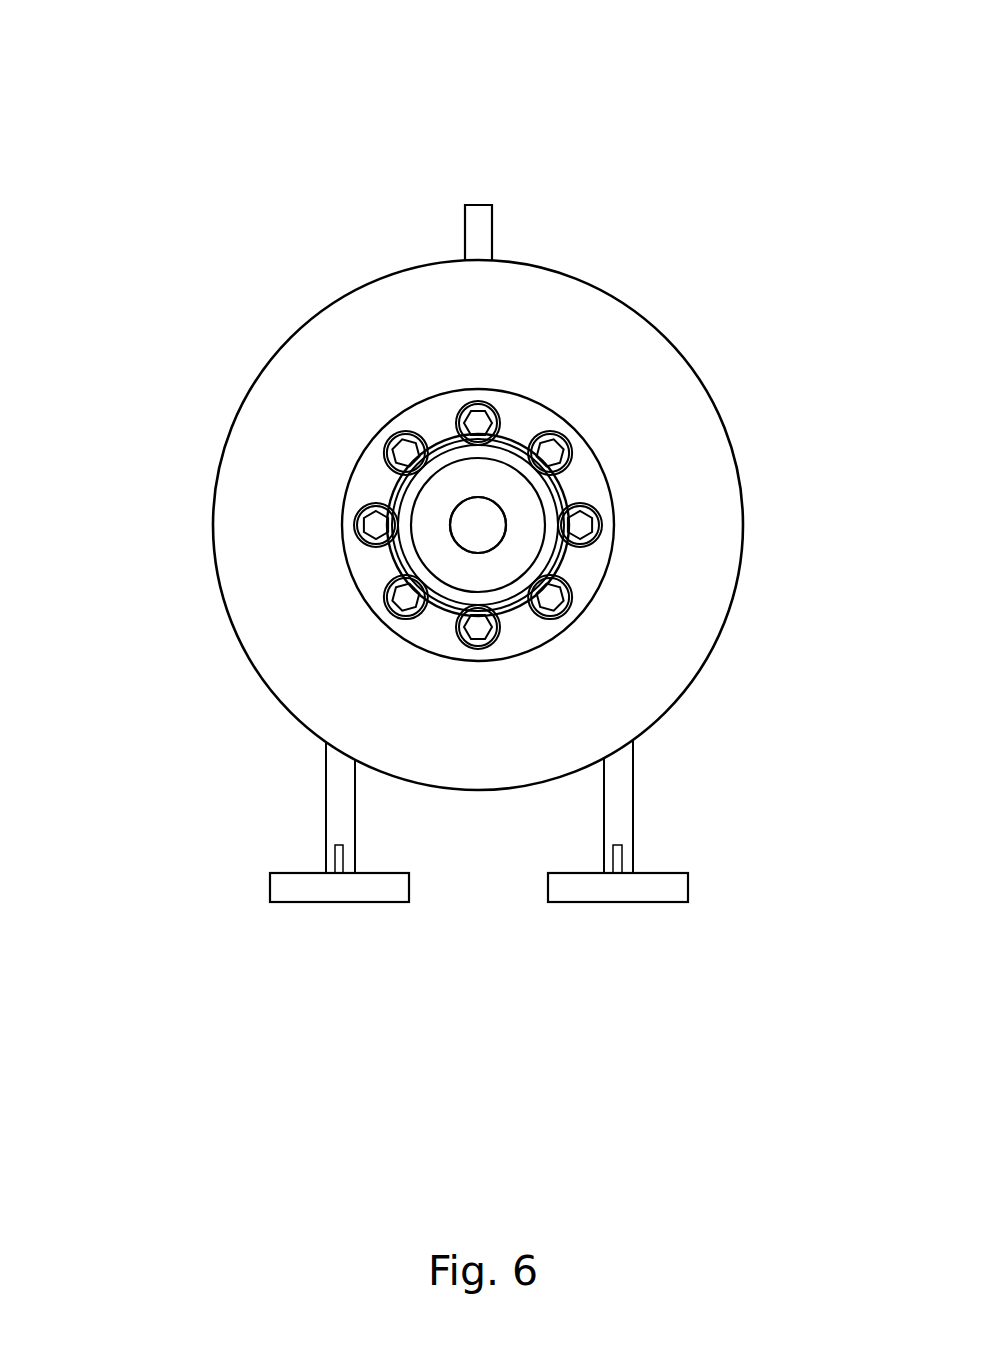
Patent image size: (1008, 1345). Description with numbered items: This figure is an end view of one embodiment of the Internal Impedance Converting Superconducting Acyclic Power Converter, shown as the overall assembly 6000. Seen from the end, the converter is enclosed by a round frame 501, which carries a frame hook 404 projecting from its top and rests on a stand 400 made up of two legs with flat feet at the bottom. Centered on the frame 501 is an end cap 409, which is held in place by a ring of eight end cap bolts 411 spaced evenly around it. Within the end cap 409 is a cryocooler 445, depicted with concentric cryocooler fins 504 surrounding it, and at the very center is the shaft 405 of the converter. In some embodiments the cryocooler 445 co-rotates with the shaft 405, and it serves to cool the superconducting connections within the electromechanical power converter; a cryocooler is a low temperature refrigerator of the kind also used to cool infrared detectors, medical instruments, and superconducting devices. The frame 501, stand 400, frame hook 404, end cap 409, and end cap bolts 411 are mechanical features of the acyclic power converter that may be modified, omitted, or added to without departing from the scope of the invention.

The motor assembly 6000 is at (462, 531).
The frame hooks 404 is at (487, 203).
The frame 501 is at (652, 382).
The end cap bolts 411 is at (395, 442).
The end cap 409 is at (358, 497).
The cryocooler 445 is at (522, 510).
The shaft 405 is at (478, 527).
The cryocooler fins 504 is at (520, 608).
The stand 400 is at (548, 903).